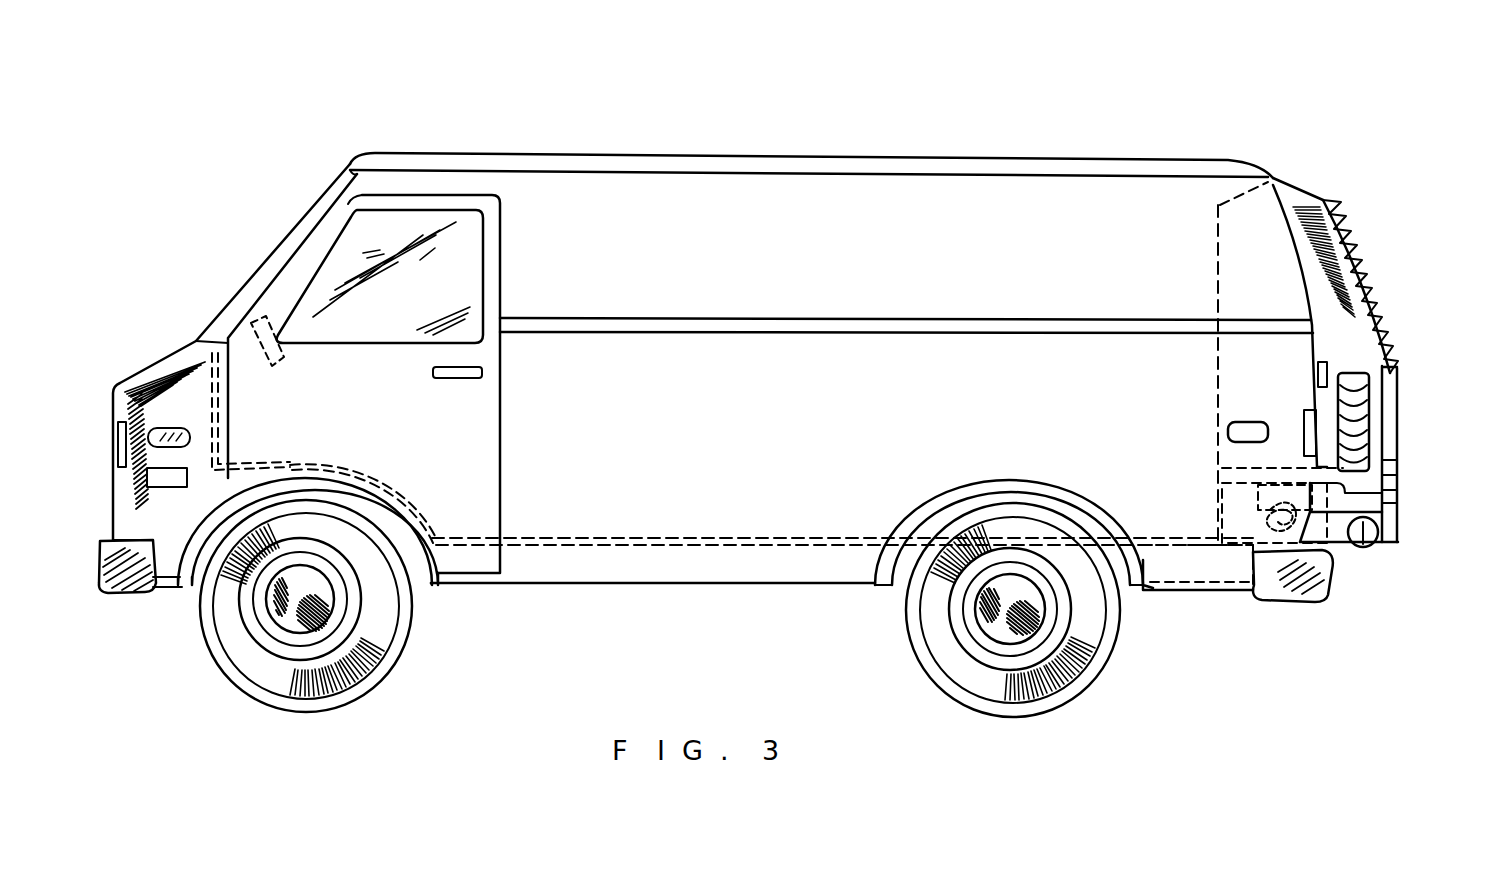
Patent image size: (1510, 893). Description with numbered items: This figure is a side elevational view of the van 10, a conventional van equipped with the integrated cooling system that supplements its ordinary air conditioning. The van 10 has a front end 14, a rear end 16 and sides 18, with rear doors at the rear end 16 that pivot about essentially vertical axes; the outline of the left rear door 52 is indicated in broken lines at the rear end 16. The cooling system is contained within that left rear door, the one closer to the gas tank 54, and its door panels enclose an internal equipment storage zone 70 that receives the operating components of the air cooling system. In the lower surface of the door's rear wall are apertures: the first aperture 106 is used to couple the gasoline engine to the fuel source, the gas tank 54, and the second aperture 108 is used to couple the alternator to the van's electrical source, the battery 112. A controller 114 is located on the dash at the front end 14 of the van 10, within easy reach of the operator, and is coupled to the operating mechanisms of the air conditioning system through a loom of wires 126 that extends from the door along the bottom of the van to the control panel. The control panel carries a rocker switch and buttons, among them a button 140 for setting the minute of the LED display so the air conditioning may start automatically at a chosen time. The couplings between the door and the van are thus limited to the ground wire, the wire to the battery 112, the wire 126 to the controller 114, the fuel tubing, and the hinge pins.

The van 10 is at (1338, 142).
The front end 14 is at (309, 192).
The rear end 16 is at (1409, 238).
The sides 18 is at (963, 190).
The rear door panel 52 is at (1220, 203).
The gas tank 54 is at (1213, 570).
The internal equipment storage zone 70 is at (1352, 310).
The first aperture 106 is at (1332, 500).
The second aperture 108 is at (1372, 546).
The battery 112 is at (173, 482).
The controller 114 is at (258, 318).
The loom of wires 126 is at (687, 540).
The minute button 140 is at (1247, 572).